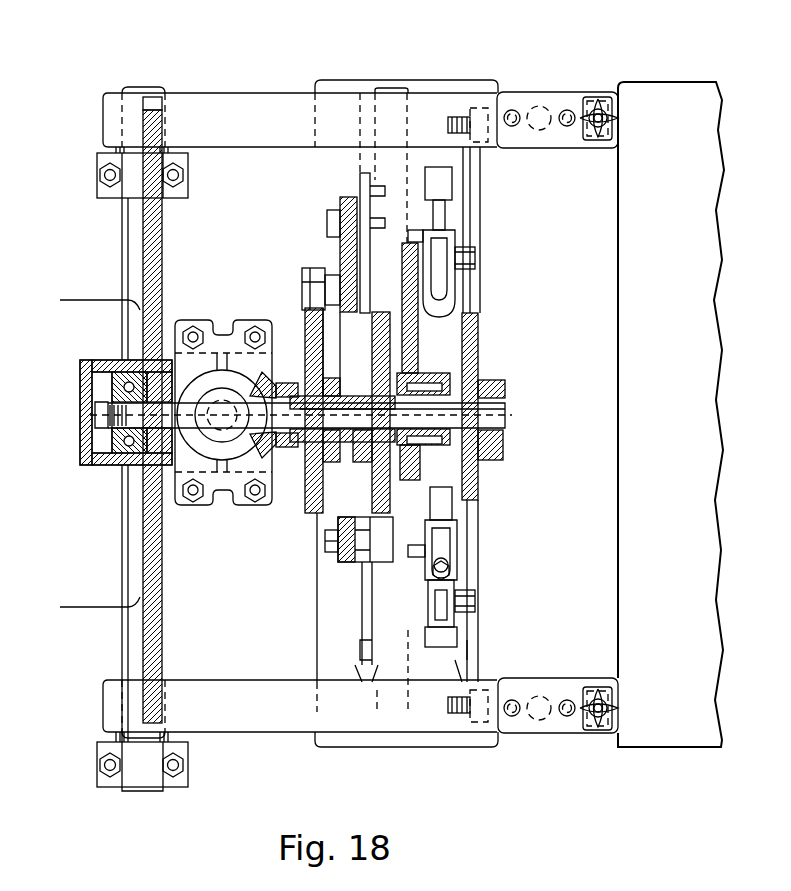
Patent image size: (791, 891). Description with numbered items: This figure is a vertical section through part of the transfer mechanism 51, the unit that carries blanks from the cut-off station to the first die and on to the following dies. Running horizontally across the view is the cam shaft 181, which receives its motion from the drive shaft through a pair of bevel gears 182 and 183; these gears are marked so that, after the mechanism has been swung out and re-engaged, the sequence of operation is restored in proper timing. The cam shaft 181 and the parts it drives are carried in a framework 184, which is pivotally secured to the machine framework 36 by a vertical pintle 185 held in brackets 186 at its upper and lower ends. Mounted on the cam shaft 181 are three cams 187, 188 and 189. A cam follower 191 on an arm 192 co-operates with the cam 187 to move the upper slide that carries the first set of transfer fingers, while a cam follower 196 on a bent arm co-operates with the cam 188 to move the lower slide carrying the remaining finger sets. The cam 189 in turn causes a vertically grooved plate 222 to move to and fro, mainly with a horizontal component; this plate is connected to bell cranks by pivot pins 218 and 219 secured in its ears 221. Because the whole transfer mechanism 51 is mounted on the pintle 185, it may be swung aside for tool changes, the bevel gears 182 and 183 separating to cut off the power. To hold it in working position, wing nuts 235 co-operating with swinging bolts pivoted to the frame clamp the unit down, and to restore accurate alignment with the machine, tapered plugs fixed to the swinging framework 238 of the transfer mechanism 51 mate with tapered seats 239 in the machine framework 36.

The machine framework 36 is at (690, 728).
The transfer mechanism 51 is at (247, 80).
The cam shaft 181 is at (505, 420).
The bevel gear 182 is at (222, 458).
The bevel gear 183 is at (272, 458).
The framework 184 is at (150, 233).
The vertical pintle 185 is at (143, 90).
The brackets 186 is at (97, 180).
The cam 187 is at (305, 330).
The cam 188 is at (380, 312).
The cam 189 is at (478, 360).
The cam follower 191 is at (305, 282).
The arm 192 is at (340, 240).
The cam follower 196 is at (380, 562).
The pivot pin 218 is at (475, 600).
The pivot pin 219 is at (472, 262).
The ears 221 is at (480, 216).
The plate 222 is at (478, 556).
The wing nuts 235 is at (618, 120).
The swinging framework 238 is at (512, 100).
The tapered seats 239 is at (540, 108).